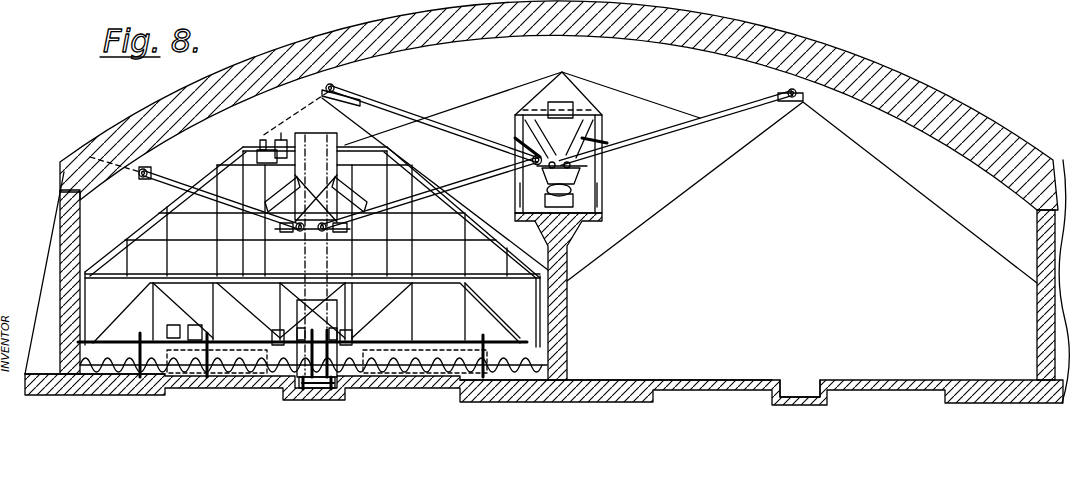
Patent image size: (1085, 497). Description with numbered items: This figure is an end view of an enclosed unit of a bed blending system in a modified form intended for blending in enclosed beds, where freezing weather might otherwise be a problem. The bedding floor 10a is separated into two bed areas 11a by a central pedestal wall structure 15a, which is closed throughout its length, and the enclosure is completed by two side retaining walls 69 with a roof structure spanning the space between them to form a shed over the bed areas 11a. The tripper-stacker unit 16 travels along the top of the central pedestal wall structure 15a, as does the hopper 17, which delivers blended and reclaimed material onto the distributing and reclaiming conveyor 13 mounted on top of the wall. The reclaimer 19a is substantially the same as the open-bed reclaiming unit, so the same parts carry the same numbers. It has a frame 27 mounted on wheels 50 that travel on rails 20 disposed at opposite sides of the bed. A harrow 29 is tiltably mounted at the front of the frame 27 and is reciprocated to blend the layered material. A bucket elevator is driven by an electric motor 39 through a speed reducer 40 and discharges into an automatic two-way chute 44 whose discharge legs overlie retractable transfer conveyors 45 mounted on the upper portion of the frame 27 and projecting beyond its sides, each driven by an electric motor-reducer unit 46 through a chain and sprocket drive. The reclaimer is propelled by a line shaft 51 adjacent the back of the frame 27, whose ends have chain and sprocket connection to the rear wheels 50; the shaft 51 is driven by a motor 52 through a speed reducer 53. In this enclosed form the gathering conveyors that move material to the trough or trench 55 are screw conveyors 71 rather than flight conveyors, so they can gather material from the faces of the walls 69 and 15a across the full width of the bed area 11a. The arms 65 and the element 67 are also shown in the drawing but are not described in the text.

The bedding floor 10a is at (90, 378).
The bed area 11a is at (497, 386).
The distributing and reclaiming conveyor 13 is at (580, 189).
The central pedestal wall structure 15a is at (566, 318).
The tripper-stacker unit 16 is at (512, 134).
The hopper 17 is at (582, 172).
The reclaimer 19a is at (455, 216).
The rail 20 is at (645, 380).
The frame 27 is at (372, 287).
The harrow 29 is at (137, 231).
The electric motor 39 is at (262, 142).
The speed reducer 40 is at (281, 140).
The automatic two-way chute 44 is at (312, 133).
The transfer conveyor 45 is at (184, 176).
The electric motor-reducer unit 46 is at (278, 229).
The wheel 50 is at (165, 378).
The line shaft 51 is at (430, 330).
The motor 52 is at (174, 327).
The speed reducer 53 is at (195, 323).
The trough 55 is at (292, 403).
The suspension arm 65 is at (414, 114).
The feed inlet 67 is at (573, 108).
The side retaining wall 69 is at (62, 216).
The screw conveyor 71 is at (112, 378).